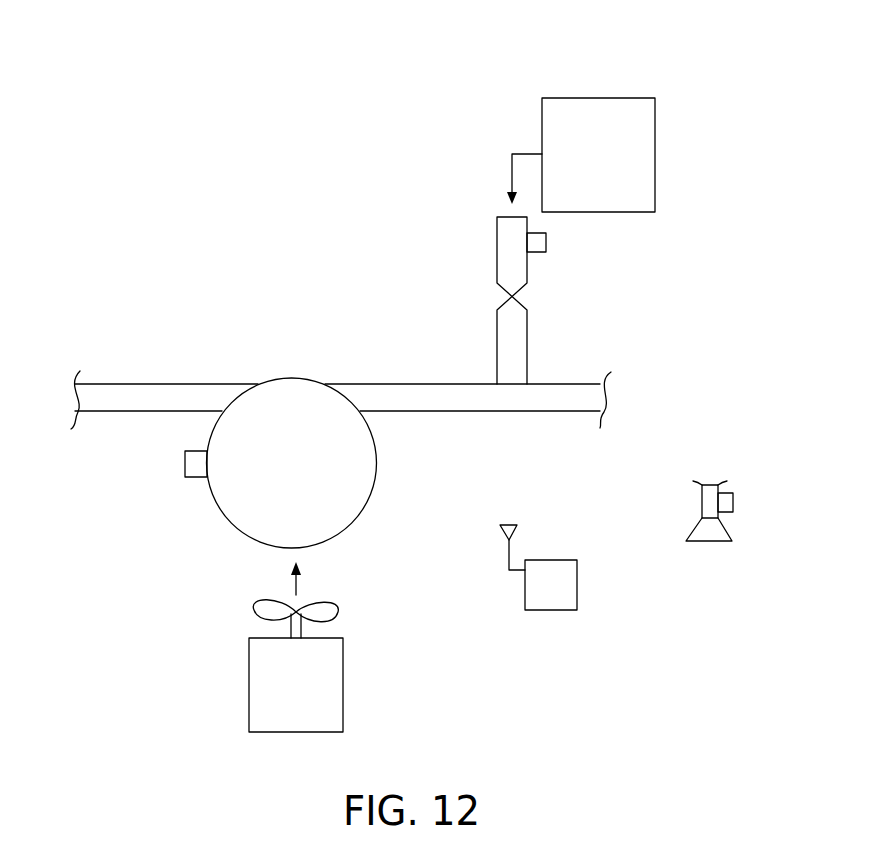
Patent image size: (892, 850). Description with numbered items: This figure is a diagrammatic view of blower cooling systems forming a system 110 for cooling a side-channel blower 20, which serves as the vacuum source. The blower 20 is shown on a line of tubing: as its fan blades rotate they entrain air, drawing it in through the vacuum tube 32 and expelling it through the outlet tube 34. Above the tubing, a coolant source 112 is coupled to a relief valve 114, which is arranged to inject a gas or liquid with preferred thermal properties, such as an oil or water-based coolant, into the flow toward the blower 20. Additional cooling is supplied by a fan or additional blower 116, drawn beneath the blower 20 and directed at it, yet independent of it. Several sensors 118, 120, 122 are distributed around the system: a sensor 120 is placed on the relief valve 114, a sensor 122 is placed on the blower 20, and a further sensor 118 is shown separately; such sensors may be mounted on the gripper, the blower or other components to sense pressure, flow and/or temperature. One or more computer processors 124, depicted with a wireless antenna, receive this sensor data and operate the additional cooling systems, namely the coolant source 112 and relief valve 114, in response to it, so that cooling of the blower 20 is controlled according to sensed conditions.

The system 110 is at (337, 51).
The coolant source 112 is at (598, 97).
The relief valve 114 is at (497, 258).
The fan or additional blower 116 is at (345, 690).
The sensor 118 is at (735, 503).
The sensor 120 is at (547, 244).
The sensor 122 is at (185, 464).
The computer processors 124 is at (552, 612).
The side-channel blower 20 is at (378, 470).
The vacuum tube 32 is at (422, 383).
The outlet tube 34 is at (168, 383).